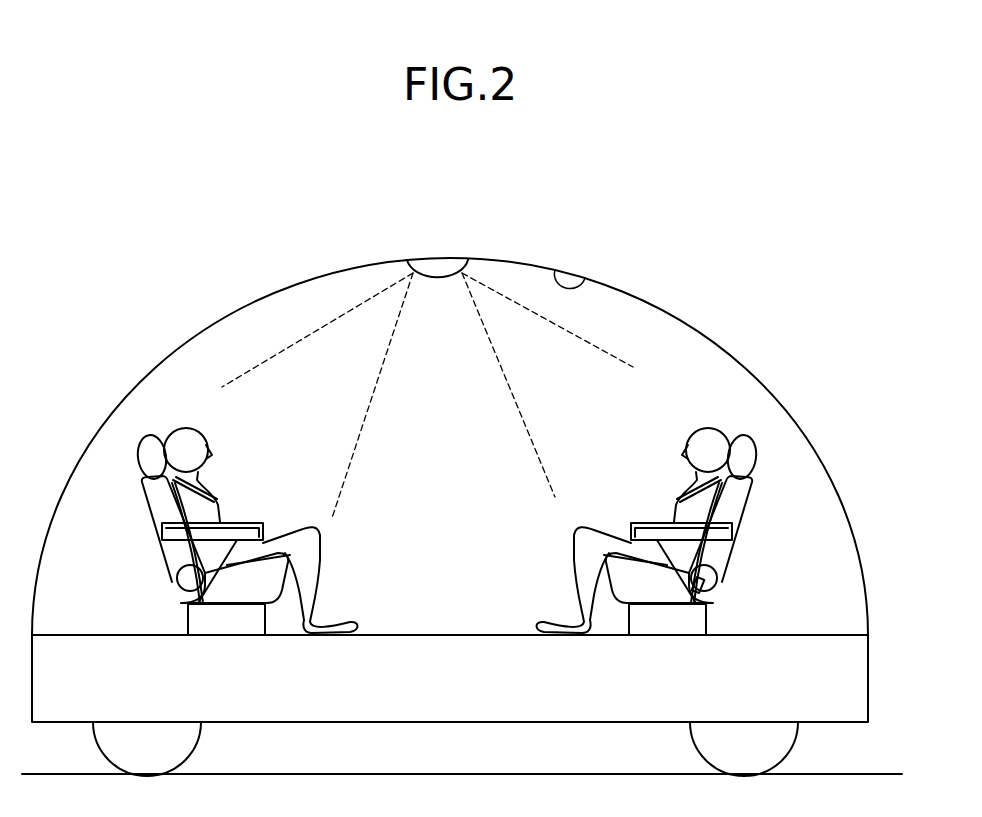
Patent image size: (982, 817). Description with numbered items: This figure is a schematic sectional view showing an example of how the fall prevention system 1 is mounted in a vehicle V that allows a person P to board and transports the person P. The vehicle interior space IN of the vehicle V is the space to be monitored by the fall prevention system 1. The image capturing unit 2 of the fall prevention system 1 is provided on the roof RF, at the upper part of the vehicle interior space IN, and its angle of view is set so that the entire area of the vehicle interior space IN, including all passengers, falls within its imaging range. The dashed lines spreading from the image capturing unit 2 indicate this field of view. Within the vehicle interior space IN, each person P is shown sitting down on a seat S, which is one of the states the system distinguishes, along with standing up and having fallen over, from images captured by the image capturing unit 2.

The fall prevention system 1 is at (451, 216).
The image capturing unit 2 is at (443, 267).
The roof RF is at (585, 279).
The vehicle V is at (686, 303).
The vehicle interior space IN is at (680, 355).
The seat S is at (143, 512).
The person P is at (181, 425).